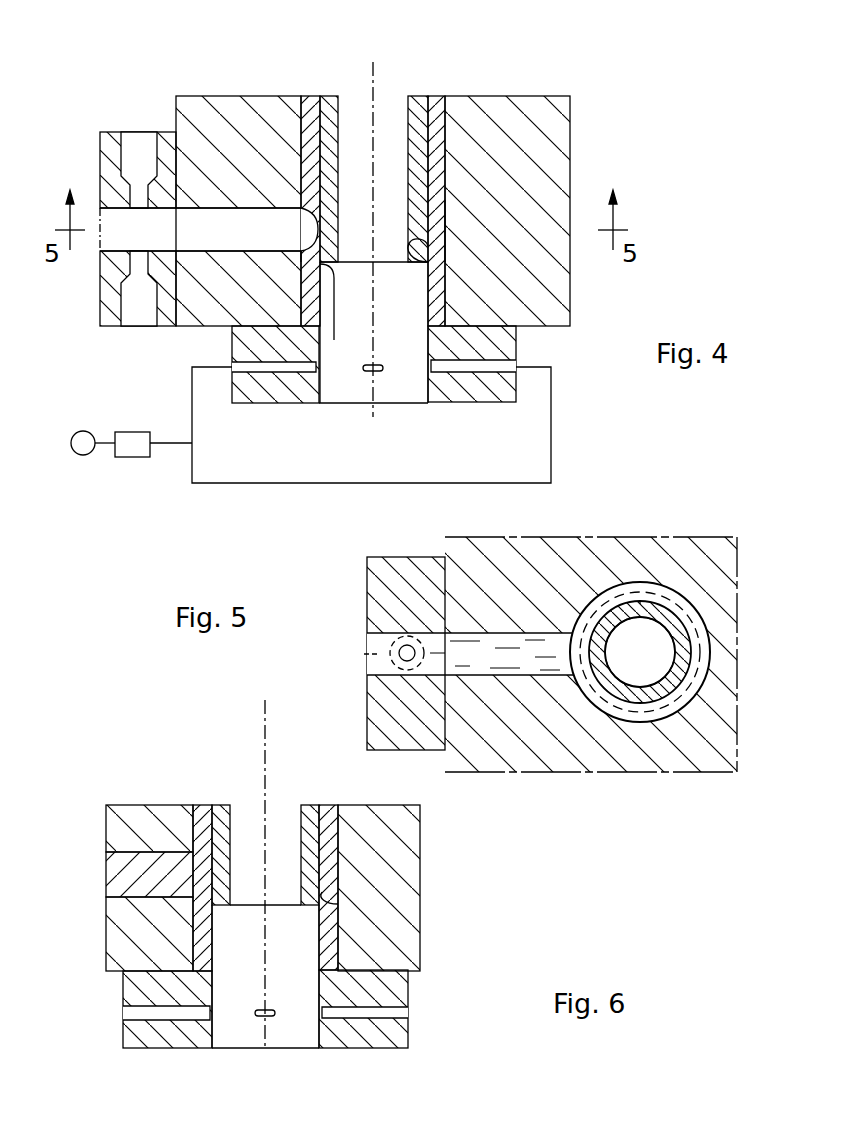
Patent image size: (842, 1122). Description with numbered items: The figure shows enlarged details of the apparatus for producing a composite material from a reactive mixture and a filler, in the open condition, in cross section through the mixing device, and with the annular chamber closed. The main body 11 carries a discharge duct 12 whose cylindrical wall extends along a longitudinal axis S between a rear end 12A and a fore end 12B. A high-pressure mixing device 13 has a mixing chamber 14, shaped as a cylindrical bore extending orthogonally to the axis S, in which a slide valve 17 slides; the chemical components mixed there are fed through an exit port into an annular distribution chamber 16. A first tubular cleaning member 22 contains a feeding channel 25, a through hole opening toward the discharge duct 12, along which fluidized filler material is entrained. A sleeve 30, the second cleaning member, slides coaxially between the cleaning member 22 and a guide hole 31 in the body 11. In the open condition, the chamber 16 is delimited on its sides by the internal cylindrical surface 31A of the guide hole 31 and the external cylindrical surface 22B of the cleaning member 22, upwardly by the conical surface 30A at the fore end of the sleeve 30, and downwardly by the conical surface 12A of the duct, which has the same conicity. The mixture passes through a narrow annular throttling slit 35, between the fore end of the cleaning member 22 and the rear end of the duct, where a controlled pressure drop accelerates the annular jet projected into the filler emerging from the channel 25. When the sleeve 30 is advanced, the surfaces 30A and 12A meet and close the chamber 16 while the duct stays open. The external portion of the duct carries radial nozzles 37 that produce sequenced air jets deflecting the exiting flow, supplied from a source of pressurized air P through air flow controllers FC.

In FIG. 4, the main body 11 is at (230, 110).
In FIG. 5, the main body 11 is at (640, 548).
In FIG. 6, the main body 11 is at (395, 852).
In FIG. 4, the discharge duct 12 is at (352, 385).
In FIG. 6, the discharge duct 12 is at (287, 1012).
In FIG. 4, the rear end of the discharge duct 12A is at (303, 253).
In FIG. 4, the fore end of the discharge duct 12B is at (252, 388).
In FIG. 6, the fore end of the discharge duct 12B is at (140, 1033).
In FIG. 4, the high-pressure mixing device 13 is at (99, 90).
In FIG. 5, the high-pressure mixing device 13 is at (392, 535).
In FIG. 4, the mixing chamber 14 is at (135, 225).
In FIG. 5, the mixing chamber 14 is at (367, 652).
In FIG. 4, the annular distribution chamber 16 is at (445, 250).
In FIG. 5, the annular distribution chamber 16 is at (610, 715).
In FIG. 6, the slide valve 17 is at (138, 875).
In FIG. 4, the cleaning member 22 is at (413, 136).
In FIG. 5, the cleaning member 22 is at (690, 600).
In FIG. 6, the cleaning member 22 is at (300, 825).
In FIG. 4, the external cylindrical surface of the first cleaning member 22B is at (403, 264).
In FIG. 5, the external cylindrical surface of the first cleaning member 22B is at (665, 602).
In FIG. 4, the feeding channel 25 is at (345, 95).
In FIG. 5, the feeding channel 25 is at (640, 672).
In FIG. 6, the feeding channel 25 is at (245, 830).
In FIG. 4, the sleeve 30 is at (440, 138).
In FIG. 6, the sleeve 30 is at (203, 828).
In FIG. 4, the conical surface at the fore end of the sleeve 30A is at (298, 212).
In FIG. 4, the guide hole 31 is at (447, 177).
In FIG. 4, the internal cylindrical surface of the guide hole 31A is at (443, 222).
In FIG. 5, the internal cylindrical surface of the guide hole 31A is at (600, 582).
In FIG. 4, the annular throttling slit 35 is at (334, 300).
In FIG. 4, the radial nozzles 37 is at (503, 365).
In FIG. 6, the radial nozzles 37 is at (137, 1014).
In FIG. 4, the longitudinal axis S is at (378, 382).
In FIG. 6, the longitudinal axis S is at (263, 722).
In FIG. 4, the source of pressurized air P is at (83, 456).
In FIG. 4, the air flow controllers FC is at (133, 458).